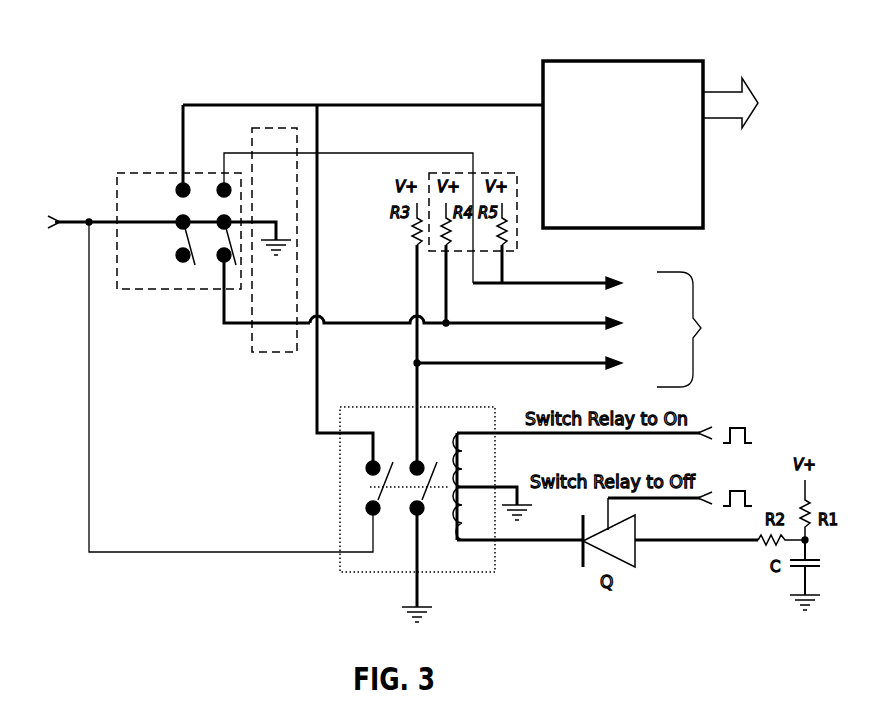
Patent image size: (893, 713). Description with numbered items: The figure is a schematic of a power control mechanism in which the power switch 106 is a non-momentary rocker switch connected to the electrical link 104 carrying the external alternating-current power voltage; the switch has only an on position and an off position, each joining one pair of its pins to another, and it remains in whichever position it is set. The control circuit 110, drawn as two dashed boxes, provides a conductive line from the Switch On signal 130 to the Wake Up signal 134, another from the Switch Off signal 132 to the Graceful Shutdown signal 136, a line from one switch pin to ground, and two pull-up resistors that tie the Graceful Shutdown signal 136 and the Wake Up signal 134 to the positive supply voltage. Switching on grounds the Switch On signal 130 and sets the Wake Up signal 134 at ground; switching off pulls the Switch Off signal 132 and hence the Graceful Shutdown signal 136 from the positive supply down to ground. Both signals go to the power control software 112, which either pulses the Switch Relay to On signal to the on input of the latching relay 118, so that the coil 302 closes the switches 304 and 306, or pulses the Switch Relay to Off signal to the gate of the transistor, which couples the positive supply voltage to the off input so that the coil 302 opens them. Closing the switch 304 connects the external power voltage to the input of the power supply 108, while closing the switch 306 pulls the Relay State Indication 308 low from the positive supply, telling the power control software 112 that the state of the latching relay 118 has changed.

The electrical link 104 is at (68, 225).
The power switch 106 is at (155, 173).
The power supply 108 is at (610, 61).
The control circuit 110 is at (270, 128).
The power control software 112 is at (727, 329).
The latching relay 118 is at (430, 572).
The Switch On signal 130 is at (240, 152).
The Switch Off signal 132 is at (237, 325).
The Wake Up signal 134 is at (626, 290).
The Graceful Shutdown signal 136 is at (630, 326).
The coil 302 is at (465, 502).
The switch 304 is at (400, 488).
The switch 306 is at (428, 500).
The Relay State Indication 308 is at (600, 369).